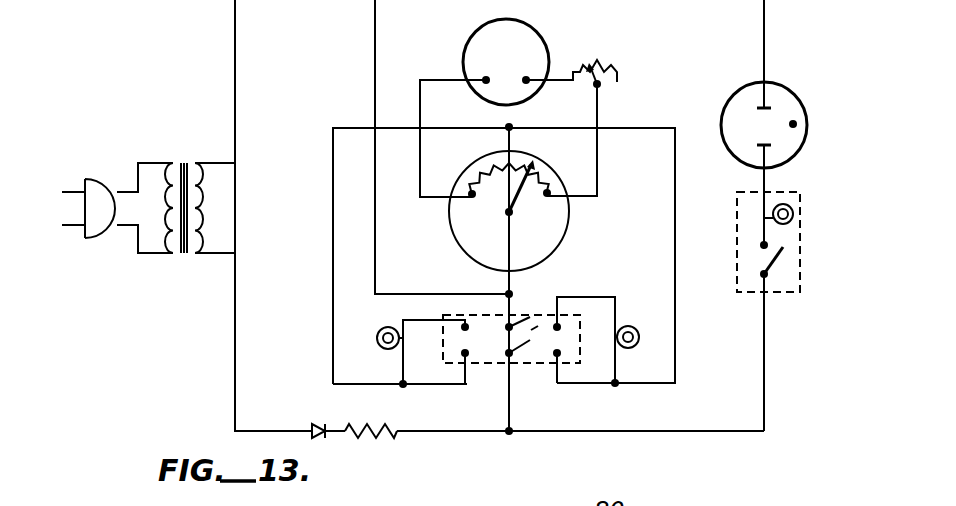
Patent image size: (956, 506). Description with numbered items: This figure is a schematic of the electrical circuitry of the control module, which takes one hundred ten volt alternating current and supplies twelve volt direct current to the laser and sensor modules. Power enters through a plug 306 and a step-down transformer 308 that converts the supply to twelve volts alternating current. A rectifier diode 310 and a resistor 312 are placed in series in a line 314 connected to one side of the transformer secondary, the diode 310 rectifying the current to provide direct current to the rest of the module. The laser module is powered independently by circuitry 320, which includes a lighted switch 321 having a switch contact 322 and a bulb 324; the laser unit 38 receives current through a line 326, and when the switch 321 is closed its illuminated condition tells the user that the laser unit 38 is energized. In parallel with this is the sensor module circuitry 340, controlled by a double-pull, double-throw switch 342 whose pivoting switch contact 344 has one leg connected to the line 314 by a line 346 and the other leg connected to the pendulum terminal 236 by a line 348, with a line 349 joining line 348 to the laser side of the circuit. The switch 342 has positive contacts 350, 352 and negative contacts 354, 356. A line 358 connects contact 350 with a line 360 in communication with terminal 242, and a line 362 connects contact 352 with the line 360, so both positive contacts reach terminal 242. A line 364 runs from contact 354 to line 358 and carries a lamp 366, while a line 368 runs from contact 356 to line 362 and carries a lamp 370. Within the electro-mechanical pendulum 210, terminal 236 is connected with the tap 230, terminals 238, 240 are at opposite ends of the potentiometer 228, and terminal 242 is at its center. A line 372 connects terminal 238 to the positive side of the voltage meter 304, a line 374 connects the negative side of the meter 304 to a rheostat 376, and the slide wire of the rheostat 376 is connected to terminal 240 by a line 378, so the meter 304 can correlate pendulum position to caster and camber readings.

The plug 306 is at (100, 180).
The step-down transformer 308 is at (172, 163).
The sensor module circuitry 340 is at (345, 97).
The voltage meter 304 is at (536, 30).
The line 372 is at (420, 168).
The line 374 is at (560, 78).
The rheostat 376 is at (611, 62).
The line 378 is at (598, 118).
The line 358 is at (333, 287).
The line 349 is at (375, 250).
The electro-mechanical pendulum 210 is at (558, 242).
The terminal 242 is at (505, 170).
The terminal 238 is at (472, 198).
The terminal 240 is at (550, 196).
The potentiometer 228 is at (537, 162).
The tap 230 is at (522, 188).
The terminal 236 is at (511, 216).
The line 360 is at (510, 137).
The line 348 is at (500, 247).
The line 364 is at (403, 322).
The lamp 366 is at (388, 350).
The negative contact 354 is at (463, 326).
The positive contact 350 is at (468, 343).
The double-pull, double-throw switch 342 is at (530, 315).
The pivoting switch contact 344 is at (518, 356).
The negative contact 356 is at (615, 307).
The line 368 is at (602, 296).
The positive contact 352 is at (560, 356).
The lamp 370 is at (628, 349).
The line 362 is at (677, 300).
The line 346 is at (509, 405).
The line 314 is at (552, 433).
The rectifier diode 310 is at (318, 438).
The resistor 312 is at (397, 433).
The laser unit 38 is at (790, 86).
The laser module circuitry 320 is at (812, 166).
The line 326 is at (764, 182).
The bulb 324 is at (793, 210).
The lighted switch 321 is at (800, 222).
The switch contact 322 is at (785, 258).